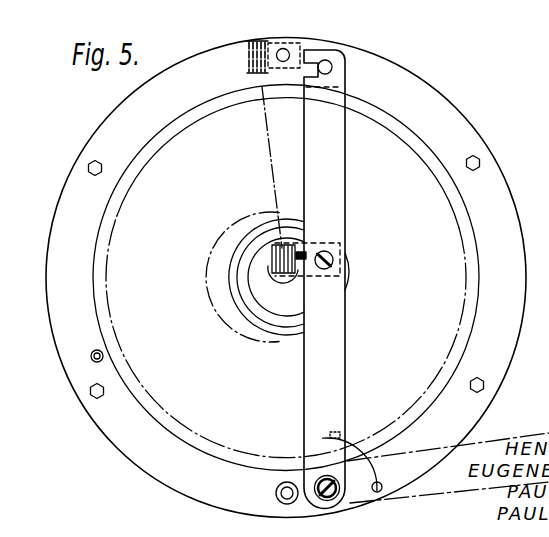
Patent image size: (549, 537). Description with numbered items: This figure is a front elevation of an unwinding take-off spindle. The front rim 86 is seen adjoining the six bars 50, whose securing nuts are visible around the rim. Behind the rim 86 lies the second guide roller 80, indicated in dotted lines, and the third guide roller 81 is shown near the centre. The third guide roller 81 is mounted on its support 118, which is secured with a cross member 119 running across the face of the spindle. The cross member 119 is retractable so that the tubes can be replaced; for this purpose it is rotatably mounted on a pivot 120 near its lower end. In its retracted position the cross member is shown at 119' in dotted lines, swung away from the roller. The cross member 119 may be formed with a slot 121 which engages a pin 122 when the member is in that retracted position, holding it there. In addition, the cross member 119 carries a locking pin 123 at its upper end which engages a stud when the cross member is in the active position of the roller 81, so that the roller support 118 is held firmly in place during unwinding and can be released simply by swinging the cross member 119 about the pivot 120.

The bars 50 is at (288, 52).
The second guide roller 80 is at (249, 62).
The third guide roller 81 is at (279, 250).
The front rim 86 is at (137, 453).
The support 118 is at (288, 278).
The cross member 119 is at (332, 279).
The cross member in retracted position 119' is at (448, 477).
The pivot 120 is at (318, 478).
The slot 121 is at (336, 432).
The pin 122 is at (380, 491).
The locking pin 123 is at (330, 64).